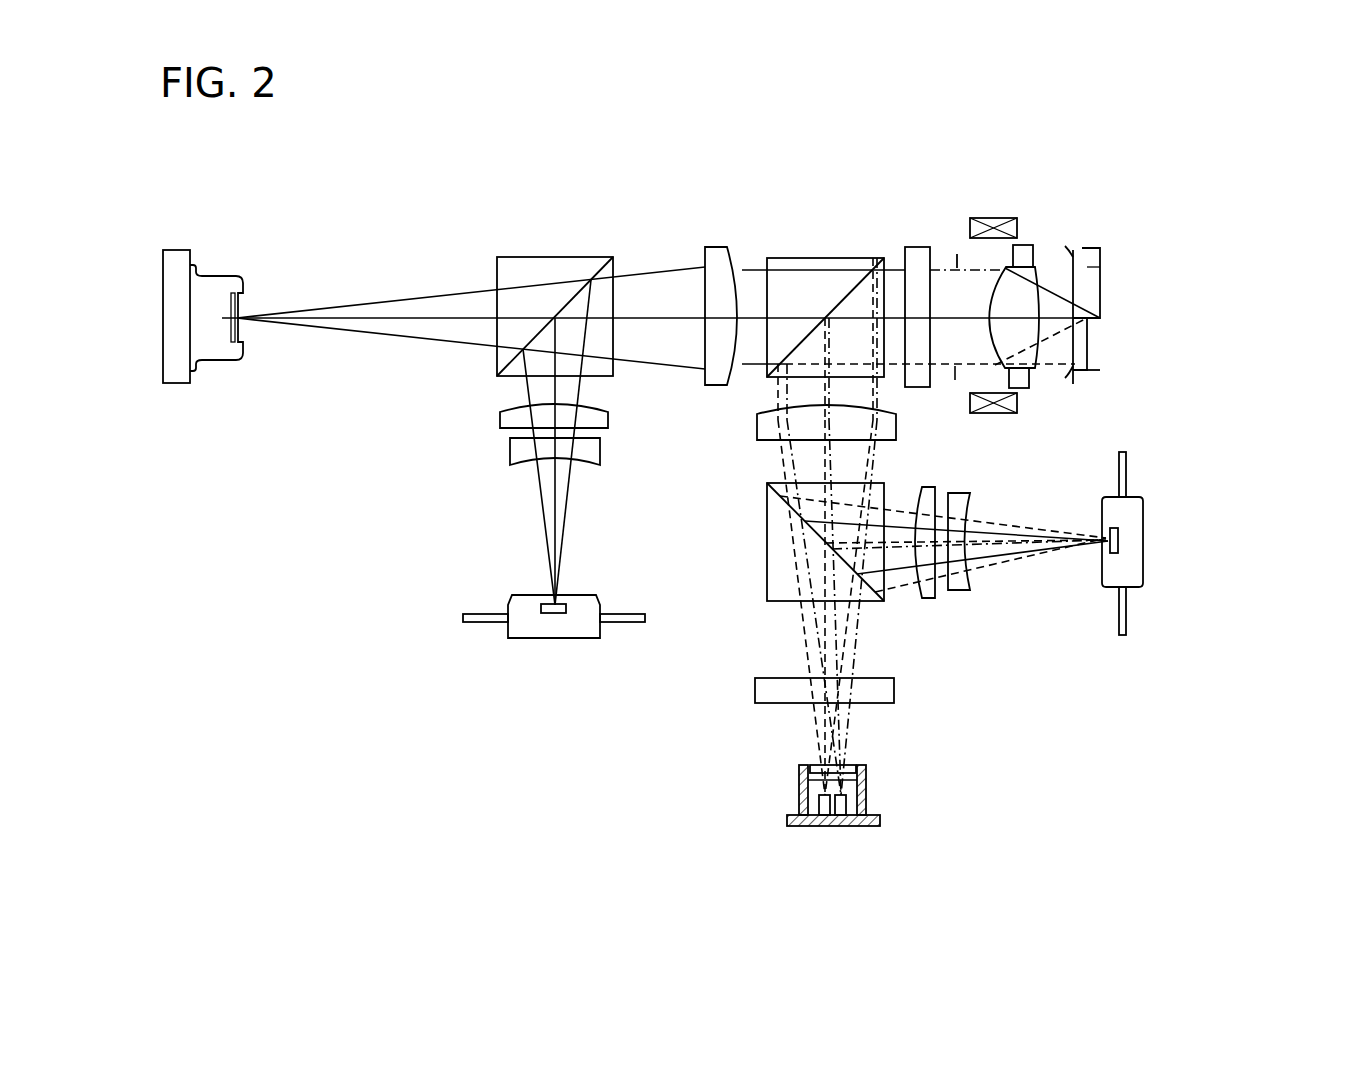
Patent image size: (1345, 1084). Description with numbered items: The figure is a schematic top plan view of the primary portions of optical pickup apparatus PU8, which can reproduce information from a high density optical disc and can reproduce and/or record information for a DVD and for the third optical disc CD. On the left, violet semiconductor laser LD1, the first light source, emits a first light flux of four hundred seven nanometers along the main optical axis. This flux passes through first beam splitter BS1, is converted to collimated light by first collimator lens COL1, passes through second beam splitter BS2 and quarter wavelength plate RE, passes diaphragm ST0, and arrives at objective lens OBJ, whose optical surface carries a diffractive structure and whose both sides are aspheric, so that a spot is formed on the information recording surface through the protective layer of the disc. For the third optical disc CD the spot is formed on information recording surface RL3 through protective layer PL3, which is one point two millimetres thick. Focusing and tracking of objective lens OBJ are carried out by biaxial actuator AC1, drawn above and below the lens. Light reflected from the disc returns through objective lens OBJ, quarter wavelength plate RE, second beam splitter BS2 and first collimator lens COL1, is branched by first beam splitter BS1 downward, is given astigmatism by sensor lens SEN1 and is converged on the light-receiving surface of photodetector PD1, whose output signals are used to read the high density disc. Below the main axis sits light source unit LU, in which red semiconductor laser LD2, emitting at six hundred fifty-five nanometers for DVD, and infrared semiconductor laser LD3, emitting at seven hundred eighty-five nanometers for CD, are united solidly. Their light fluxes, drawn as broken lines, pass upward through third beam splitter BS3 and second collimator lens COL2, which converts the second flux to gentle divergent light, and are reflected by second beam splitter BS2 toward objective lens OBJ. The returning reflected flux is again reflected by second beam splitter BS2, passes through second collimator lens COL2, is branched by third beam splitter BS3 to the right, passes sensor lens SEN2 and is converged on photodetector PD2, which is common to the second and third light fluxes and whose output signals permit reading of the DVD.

The violet semiconductor laser LD1 is at (220, 282).
The first beam splitter BS1 is at (556, 256).
The first collimator lens COL1 is at (718, 246).
The second beam splitter BS2 is at (825, 257).
The quarter wavelength plate RE is at (917, 387).
The diaphragm ST0 is at (957, 266).
The biaxial actuator AC1 is at (992, 413).
The objective lens OBJ is at (1023, 246).
The optical pickup apparatus PU8 is at (1177, 138).
The third optical disc CD is at (1149, 315).
The protective layer PL3 is at (1100, 267).
The information recording surface RL3 is at (1100, 296).
The sensor lens SEN1 is at (490, 405).
The photodetector PD1 is at (552, 638).
The second collimator lens COL2 is at (757, 425).
The third beam splitter BS3 is at (767, 533).
The sensor lens SEN2 is at (975, 613).
The photodetector PD2 is at (1143, 543).
The light source unit LU is at (828, 835).
The red semiconductor laser LD2 is at (820, 826).
The infrared semiconductor laser LD3 is at (857, 831).